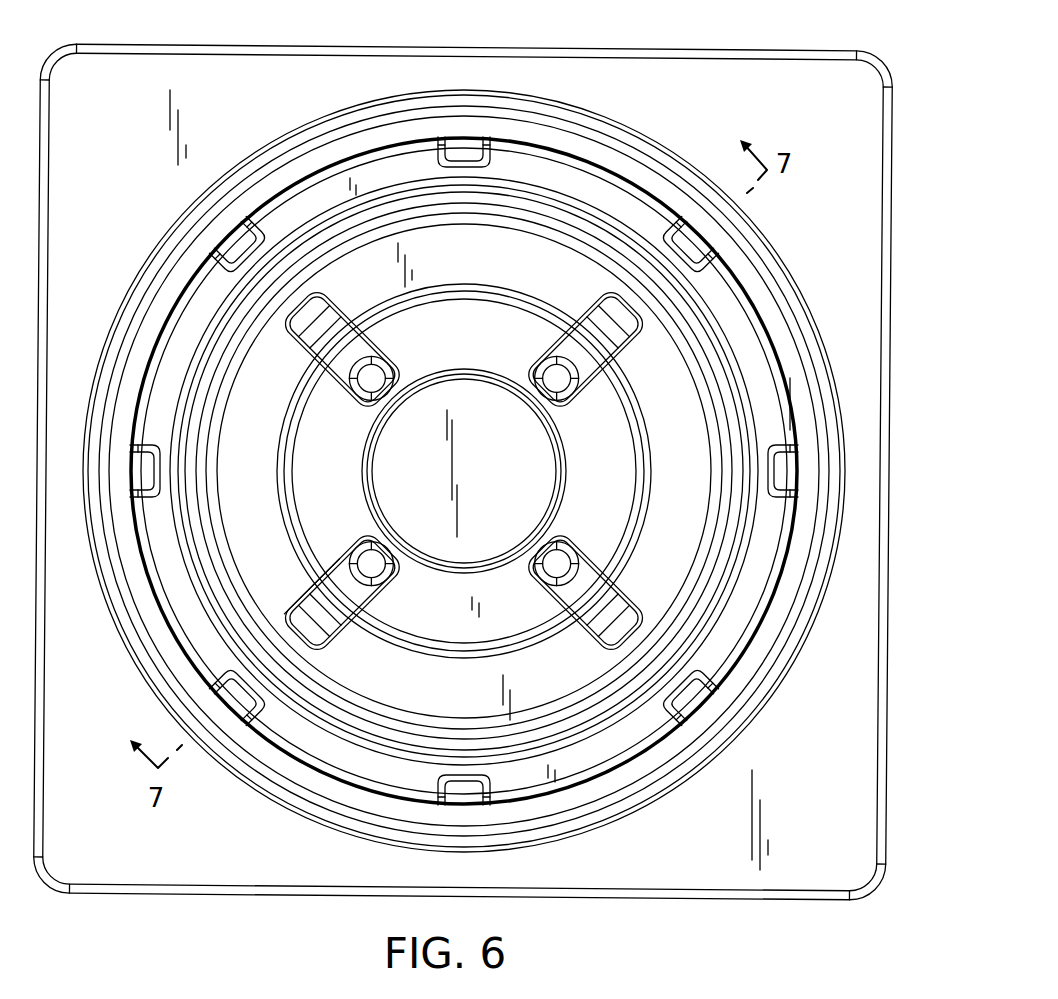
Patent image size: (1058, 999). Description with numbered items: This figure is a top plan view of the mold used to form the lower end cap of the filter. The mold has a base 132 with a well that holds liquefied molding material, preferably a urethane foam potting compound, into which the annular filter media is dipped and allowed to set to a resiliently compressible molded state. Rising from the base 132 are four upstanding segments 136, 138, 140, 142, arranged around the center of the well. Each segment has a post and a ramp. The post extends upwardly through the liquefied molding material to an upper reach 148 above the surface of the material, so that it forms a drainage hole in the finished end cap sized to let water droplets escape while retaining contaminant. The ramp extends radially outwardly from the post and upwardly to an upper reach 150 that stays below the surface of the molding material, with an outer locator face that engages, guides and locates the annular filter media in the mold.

The base 132 is at (660, 72).
The upstanding segment 136 is at (342, 574).
The upstanding segment 138 is at (342, 388).
The upstanding segment 140 is at (538, 360).
The upstanding segment 142 is at (577, 550).
The upper reach of post 148 is at (367, 562).
The upper reach of ramp 150 is at (340, 590).